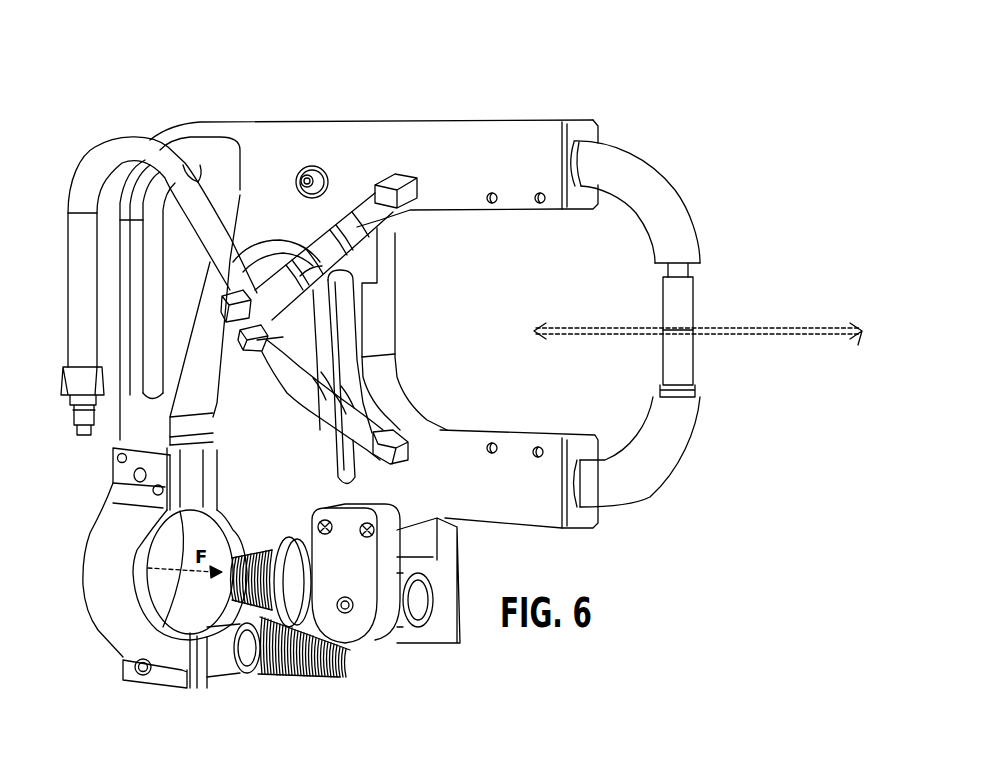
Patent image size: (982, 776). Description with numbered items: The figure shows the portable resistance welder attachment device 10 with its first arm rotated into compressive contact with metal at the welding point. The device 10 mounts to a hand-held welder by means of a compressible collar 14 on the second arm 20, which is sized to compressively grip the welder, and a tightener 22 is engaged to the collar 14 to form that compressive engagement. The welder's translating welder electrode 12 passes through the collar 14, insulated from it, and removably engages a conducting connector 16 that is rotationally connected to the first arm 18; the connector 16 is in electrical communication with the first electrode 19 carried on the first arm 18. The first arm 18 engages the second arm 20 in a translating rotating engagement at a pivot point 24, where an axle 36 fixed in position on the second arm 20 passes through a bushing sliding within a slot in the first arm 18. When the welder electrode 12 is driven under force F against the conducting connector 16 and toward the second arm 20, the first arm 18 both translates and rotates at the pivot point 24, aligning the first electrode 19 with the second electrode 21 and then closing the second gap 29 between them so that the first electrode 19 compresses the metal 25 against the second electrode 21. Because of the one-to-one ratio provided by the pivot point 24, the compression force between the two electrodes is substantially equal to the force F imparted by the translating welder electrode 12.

The device 10 is at (425, 93).
The translating welder electrode 12 is at (177, 570).
The compressible collar 14 is at (117, 583).
The conducting connector 16 is at (228, 560).
The first arm 18 is at (513, 507).
The first electrode 19 is at (657, 376).
The second arm 20 is at (540, 138).
The second electrode 21 is at (380, 229).
The tightener 22 is at (320, 660).
The pivot point 24 is at (322, 163).
The metal 25 is at (563, 327).
The second gap 29 is at (693, 327).
The axle 36 is at (297, 182).